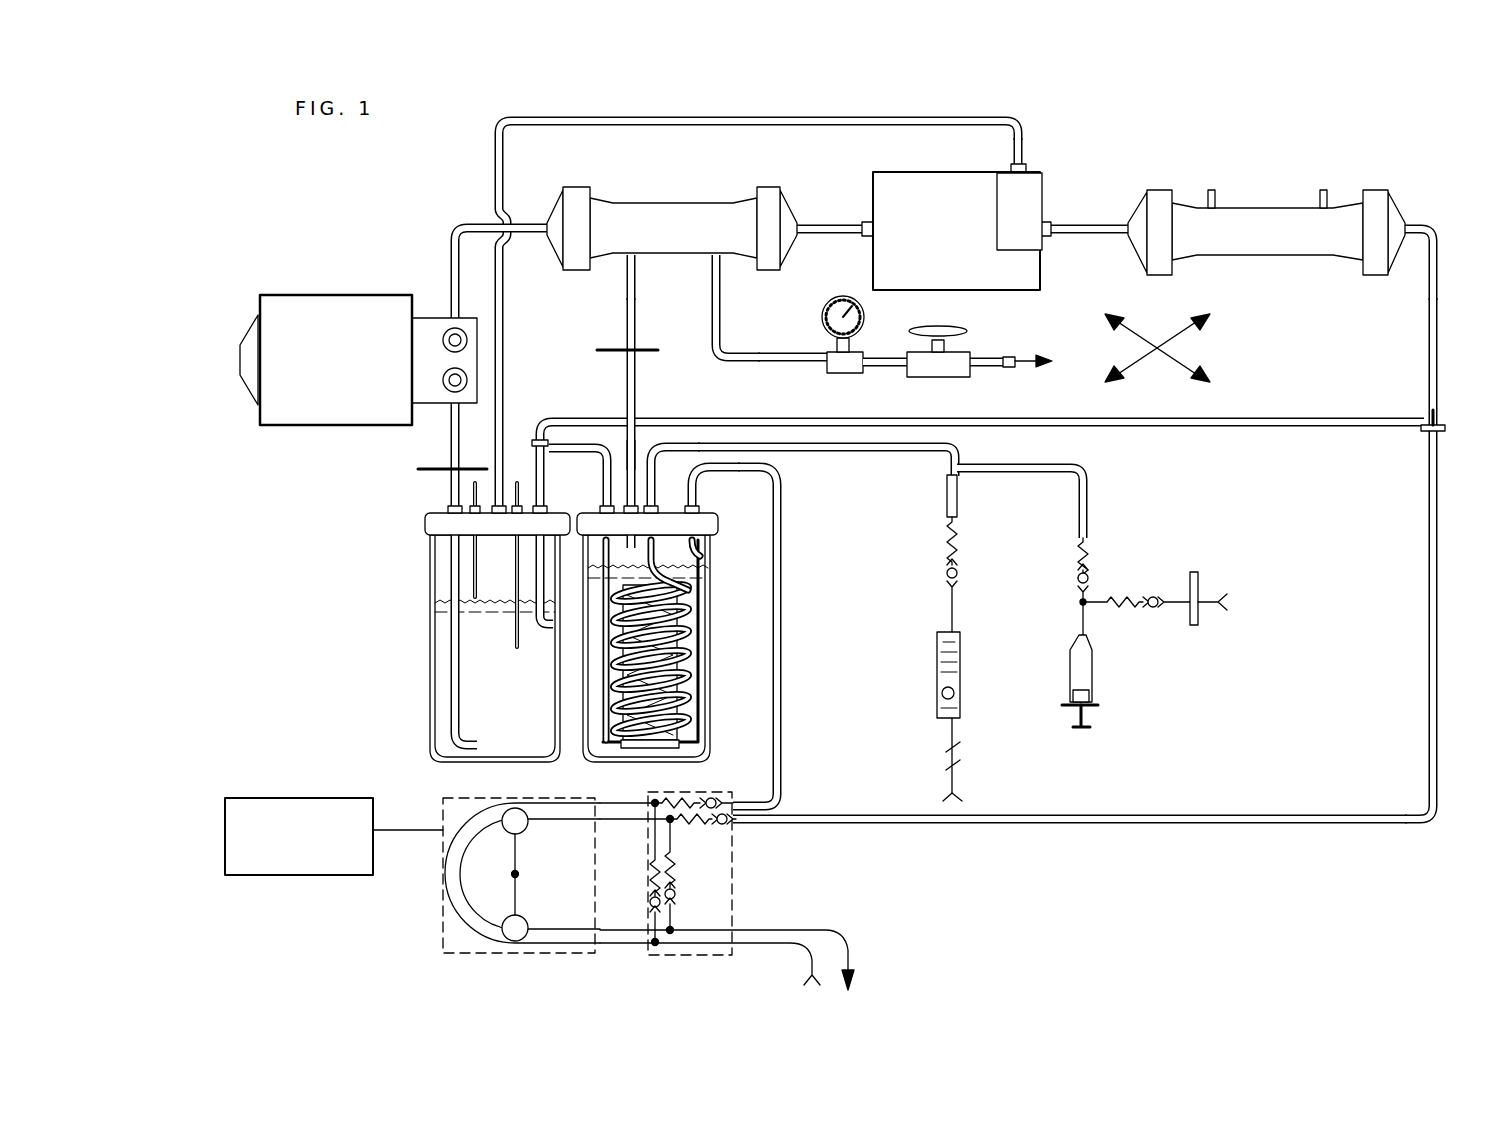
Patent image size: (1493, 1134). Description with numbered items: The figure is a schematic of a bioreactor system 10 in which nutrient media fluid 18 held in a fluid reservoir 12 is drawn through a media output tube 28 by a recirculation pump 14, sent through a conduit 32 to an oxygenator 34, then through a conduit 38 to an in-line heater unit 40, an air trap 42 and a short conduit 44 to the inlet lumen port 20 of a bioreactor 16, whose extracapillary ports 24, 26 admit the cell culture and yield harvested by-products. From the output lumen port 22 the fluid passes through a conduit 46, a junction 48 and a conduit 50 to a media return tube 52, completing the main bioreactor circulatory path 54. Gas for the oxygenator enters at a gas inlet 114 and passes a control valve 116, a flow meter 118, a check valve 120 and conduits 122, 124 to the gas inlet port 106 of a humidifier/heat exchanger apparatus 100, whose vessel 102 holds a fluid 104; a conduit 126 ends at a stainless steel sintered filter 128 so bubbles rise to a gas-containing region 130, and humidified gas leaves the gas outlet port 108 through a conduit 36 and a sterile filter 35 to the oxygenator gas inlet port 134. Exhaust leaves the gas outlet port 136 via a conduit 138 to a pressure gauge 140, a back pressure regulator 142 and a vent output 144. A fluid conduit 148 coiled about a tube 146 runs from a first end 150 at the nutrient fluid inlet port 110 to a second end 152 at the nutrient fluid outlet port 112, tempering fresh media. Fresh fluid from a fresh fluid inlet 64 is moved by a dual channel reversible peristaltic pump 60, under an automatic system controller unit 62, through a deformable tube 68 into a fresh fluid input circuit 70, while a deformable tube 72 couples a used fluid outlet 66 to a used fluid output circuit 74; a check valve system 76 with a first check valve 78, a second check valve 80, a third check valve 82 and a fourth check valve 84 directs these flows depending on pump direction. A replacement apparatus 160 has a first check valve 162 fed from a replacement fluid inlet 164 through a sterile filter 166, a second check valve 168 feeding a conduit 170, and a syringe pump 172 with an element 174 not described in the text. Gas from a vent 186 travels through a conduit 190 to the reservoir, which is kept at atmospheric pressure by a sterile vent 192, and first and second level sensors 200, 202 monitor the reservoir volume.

The bioreactor system 10 is at (392, 212).
The fluid reservoir 12 is at (430, 728).
The pump 14 is at (331, 294).
The bioreactor 16 is at (1185, 205).
The nutrient media fluid 18 is at (495, 643).
The lumen port 20 is at (1126, 245).
The lumen port 22 is at (1414, 229).
The extracapillary port 24 is at (1216, 192).
The extracapillary port 26 is at (1327, 192).
The media output tube 28 is at (450, 441).
The conduit 32 is at (461, 225).
The oxygenator 34 is at (668, 202).
The sterile filter 35 is at (646, 353).
The conduit 36 is at (626, 325).
The conduit 38 is at (818, 226).
The in-line heater unit 40 is at (908, 172).
The air trap 42 is at (1043, 195).
The short conduit 44 is at (1076, 236).
The conduit 46 is at (1438, 308).
The junction 48 is at (1446, 429).
The conduit 50 is at (1262, 419).
The media return tube 52 is at (540, 630).
The main bioreactor circulatory path 54 is at (1157, 348).
The pump 60 is at (443, 900).
The automatic system controller unit 62 is at (306, 877).
The fresh fluid inlet 64 is at (805, 975).
The used fluid outlet 66 is at (868, 978).
The deformable tube 68 is at (563, 953).
The fresh fluid input circuit 70 is at (782, 772).
The deformable tube 72 is at (538, 935).
The used fluid output circuit 74 is at (870, 825).
The check valve system 76 is at (655, 957).
The first check valve 78 is at (726, 798).
The second check valve 80 is at (690, 826).
The third check valve 82 is at (650, 881).
The fourth check valve 84 is at (677, 894).
The humidifier/heat exchanger apparatus 100 is at (797, 566).
The vessel 102 is at (710, 679).
The fluid 104 is at (700, 644).
The gas inlet port 106 is at (656, 470).
The gas outlet port 108 is at (624, 456).
The nutrient fluid inlet port 110 is at (699, 493).
The nutrient fluid outlet port 112 is at (603, 488).
The gas inlet 114 is at (946, 796).
The control valve 116 is at (946, 750).
The flow meter 118 is at (936, 694).
The check valve 120 is at (950, 556).
The conduit 122 is at (946, 497).
The conduit 124 is at (840, 453).
The conduit 126 is at (690, 585).
The stainless steel sintered filter 128 is at (678, 716).
The gas-containing region 130 is at (706, 556).
The gas inlet port 134 is at (637, 263).
The gas outlet port 136 is at (722, 266).
The conduit 138 is at (770, 355).
The pressure gauge 140 is at (866, 314).
The back pressure regulator 142 is at (972, 350).
The vent output 144 is at (1045, 366).
The tube 146 is at (680, 744).
The fluid conduit 148 is at (690, 615).
The first end 150 is at (698, 543).
The second end 152 is at (602, 706).
The apparatus 160 is at (1175, 528).
The first check valve 162 is at (1134, 598).
The replacement fluid inlet 164 is at (1222, 610).
The sterile filter 166 is at (1192, 626).
The second check valve 168 is at (1086, 552).
The conduit 170 is at (1087, 476).
The pump 172 is at (1093, 680).
The plunger 174 is at (1084, 725).
The vent 186 is at (1025, 149).
The conduit 190 is at (679, 120).
The sterile vent 192 is at (418, 472).
The first level sensor 200 is at (516, 568).
The second level sensor 202 is at (472, 592).